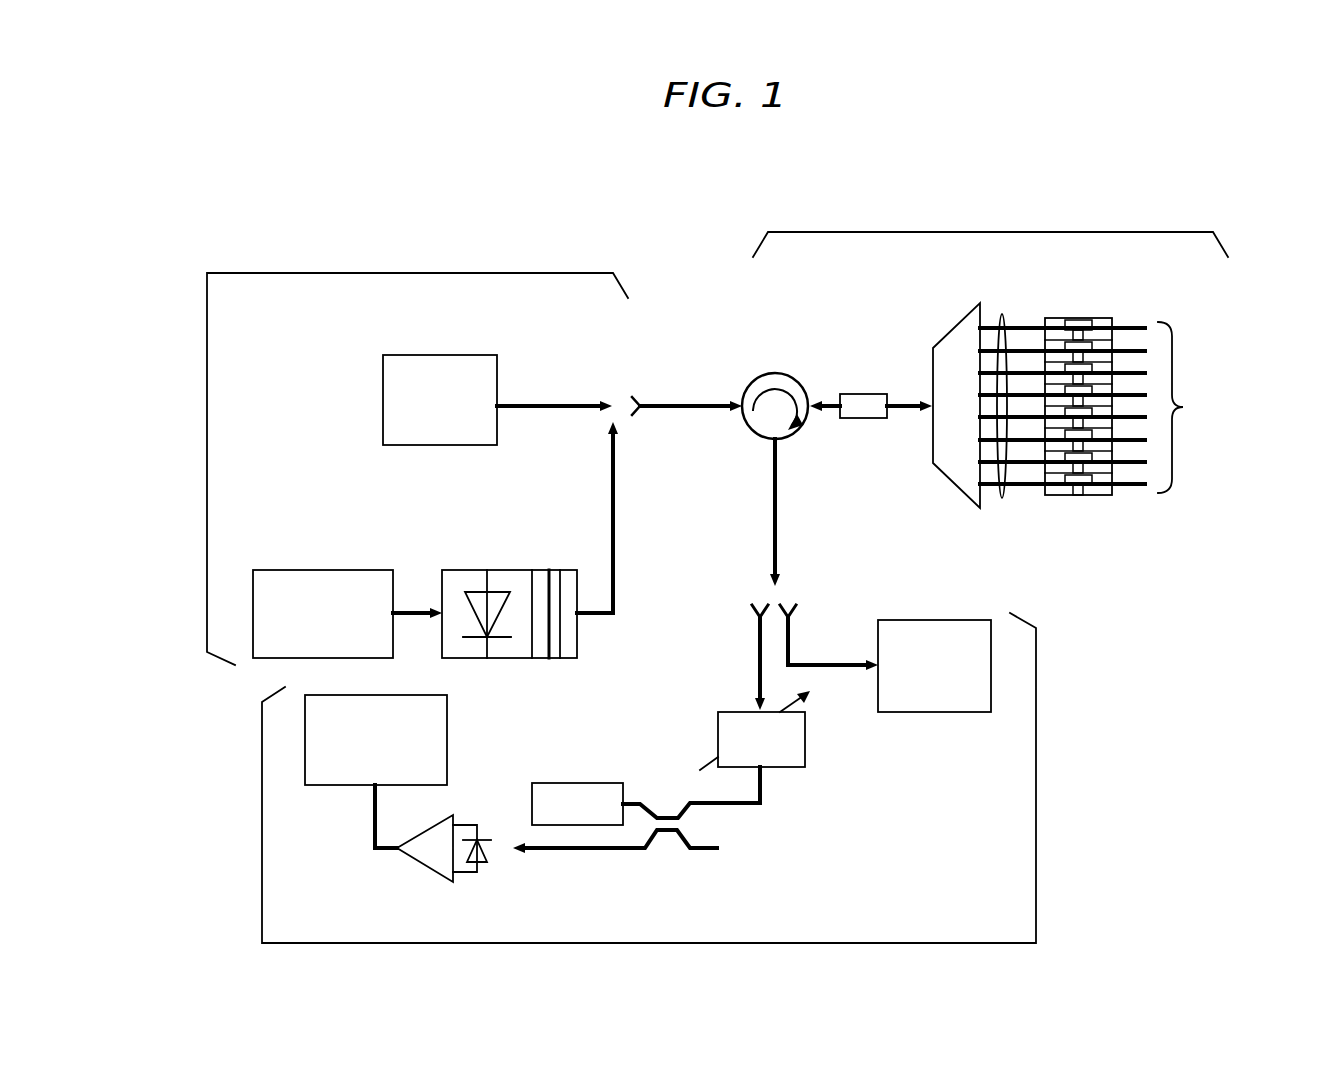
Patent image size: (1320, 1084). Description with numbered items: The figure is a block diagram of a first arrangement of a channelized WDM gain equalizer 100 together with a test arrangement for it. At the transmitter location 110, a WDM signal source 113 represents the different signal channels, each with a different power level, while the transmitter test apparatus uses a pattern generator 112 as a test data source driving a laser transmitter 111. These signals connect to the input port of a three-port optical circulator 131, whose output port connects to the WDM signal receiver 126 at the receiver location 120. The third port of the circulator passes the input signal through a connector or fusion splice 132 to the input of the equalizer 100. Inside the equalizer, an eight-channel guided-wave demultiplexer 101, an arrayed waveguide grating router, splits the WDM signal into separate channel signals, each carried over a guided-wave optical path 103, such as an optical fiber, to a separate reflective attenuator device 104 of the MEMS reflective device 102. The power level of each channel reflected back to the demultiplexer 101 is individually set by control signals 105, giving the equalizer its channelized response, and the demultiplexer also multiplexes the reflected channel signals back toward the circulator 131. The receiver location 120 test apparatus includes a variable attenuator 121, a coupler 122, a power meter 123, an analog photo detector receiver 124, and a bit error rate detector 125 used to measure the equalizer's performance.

The channelized WDM gain equalizer 100 is at (990, 232).
The 8-channel guided-wave demultiplexer 101 is at (957, 323).
The MEMS reflective device 102 is at (1080, 416).
The guided-wave optical path 103 is at (1000, 498).
The reflective attenuator device 104 is at (1078, 320).
The control signals 105 is at (1020, 323).
The transmitter location 110 is at (387, 272).
The laser transmitter 111 is at (540, 570).
The pattern generator 112 is at (323, 570).
The WDM signal source 113 is at (440, 355).
The receiver location 120 is at (1036, 787).
The variable attenuator 121 is at (805, 738).
The coupler 122 is at (670, 832).
The power meter 123 is at (580, 783).
The analog photo detector receiver 124 is at (425, 868).
The bit error rate detector 125 is at (447, 740).
The WDM signal receiver 126 is at (933, 712).
The three-port optical circulator 131 is at (775, 390).
The connector or fusion splice 132 is at (855, 370).